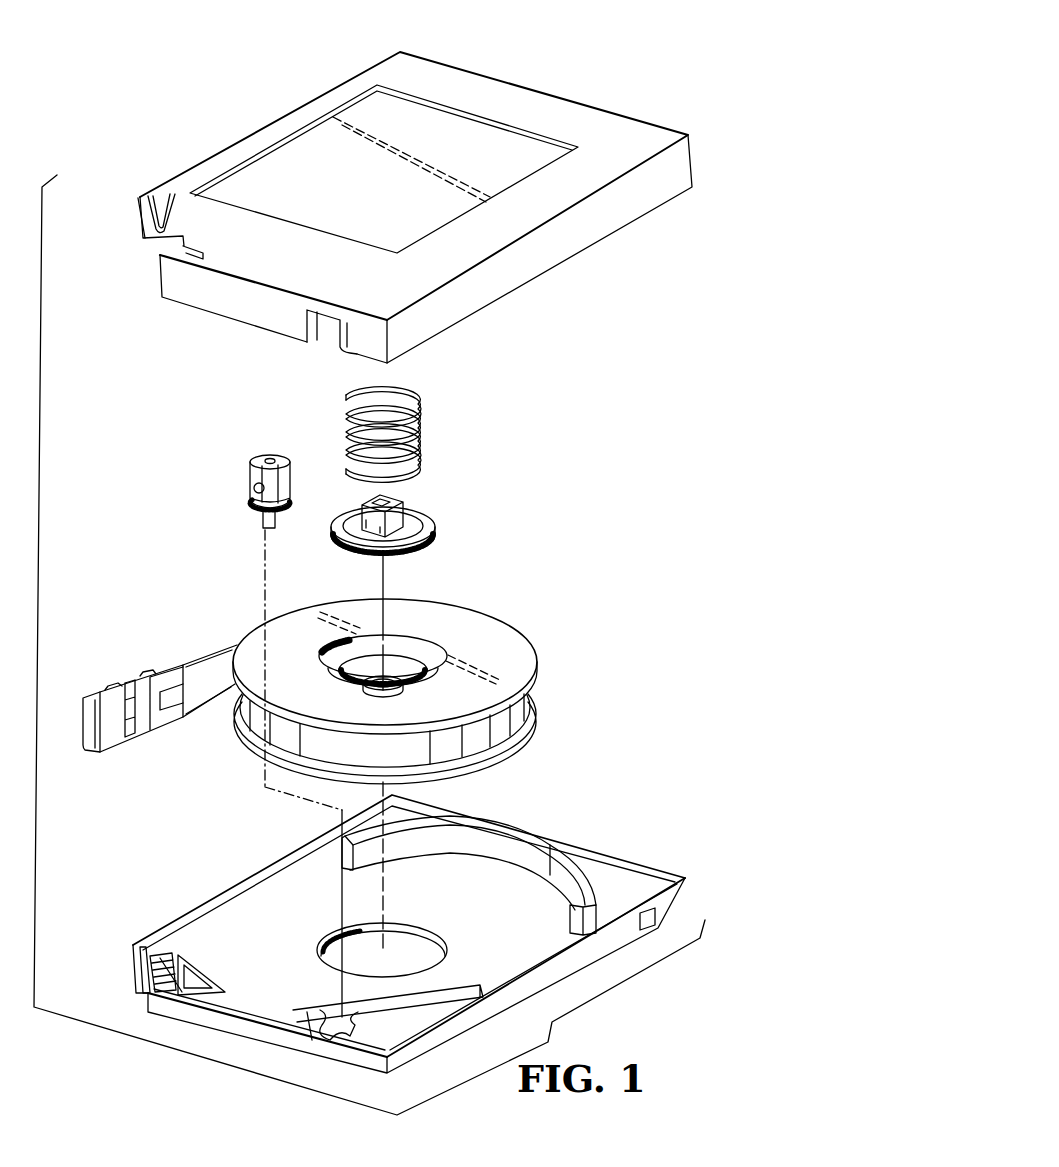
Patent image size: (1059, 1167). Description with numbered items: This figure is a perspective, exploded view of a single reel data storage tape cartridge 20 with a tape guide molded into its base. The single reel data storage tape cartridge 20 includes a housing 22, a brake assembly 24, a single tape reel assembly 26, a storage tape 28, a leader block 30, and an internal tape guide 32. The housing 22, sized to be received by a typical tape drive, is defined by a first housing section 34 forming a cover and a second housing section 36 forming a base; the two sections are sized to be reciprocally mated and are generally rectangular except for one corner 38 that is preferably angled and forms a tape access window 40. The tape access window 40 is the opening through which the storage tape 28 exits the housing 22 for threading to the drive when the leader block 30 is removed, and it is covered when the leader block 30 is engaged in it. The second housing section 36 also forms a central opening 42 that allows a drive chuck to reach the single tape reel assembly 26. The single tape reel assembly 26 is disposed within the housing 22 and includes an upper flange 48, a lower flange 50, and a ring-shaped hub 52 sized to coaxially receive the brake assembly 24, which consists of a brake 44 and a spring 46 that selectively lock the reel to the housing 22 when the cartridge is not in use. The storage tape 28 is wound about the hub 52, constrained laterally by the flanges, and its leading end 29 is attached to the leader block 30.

The single reel data storage tape cartridge 20 is at (392, 562).
The housing 22 is at (404, 561).
The brake assembly 24 is at (443, 469).
The single tape reel assembly 26 is at (448, 673).
The storage tape 28 is at (160, 681).
The leading end 29 is at (197, 685).
The leader block 30 is at (103, 678).
The internal tape guide 32 is at (482, 824).
The first housing section 34 is at (503, 73).
The second housing section 36 is at (372, 926).
The corner 38 is at (140, 227).
The tape access window 40 is at (128, 973).
The central opening 42 is at (420, 932).
The brake 44 is at (418, 525).
The spring 46 is at (423, 427).
The upper flange 48 is at (517, 658).
The lower flange 50 is at (527, 715).
The hub 52 is at (403, 650).